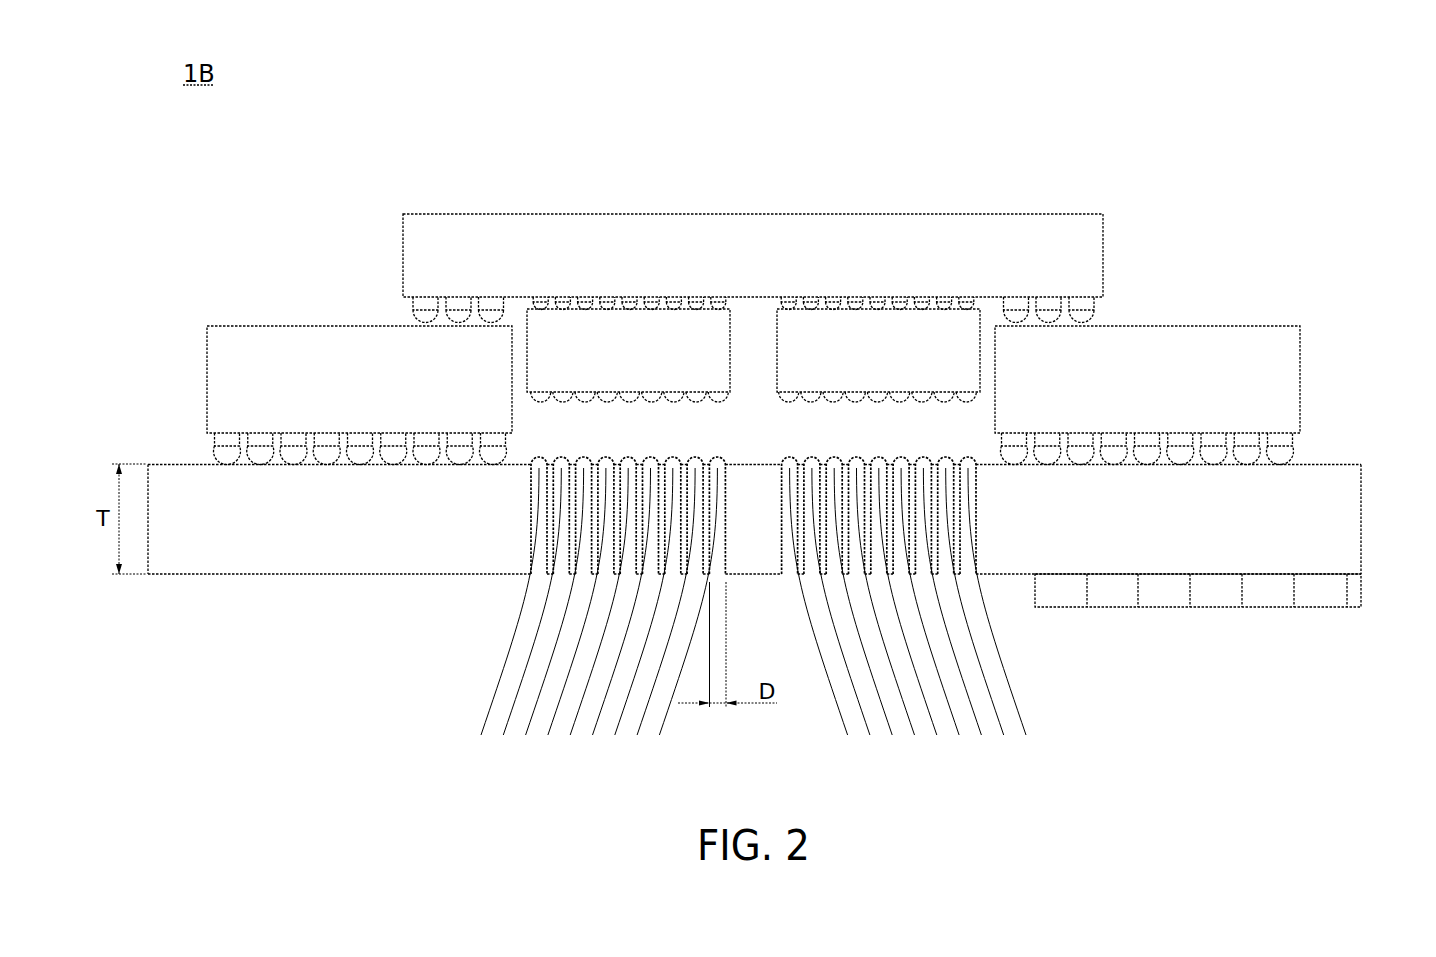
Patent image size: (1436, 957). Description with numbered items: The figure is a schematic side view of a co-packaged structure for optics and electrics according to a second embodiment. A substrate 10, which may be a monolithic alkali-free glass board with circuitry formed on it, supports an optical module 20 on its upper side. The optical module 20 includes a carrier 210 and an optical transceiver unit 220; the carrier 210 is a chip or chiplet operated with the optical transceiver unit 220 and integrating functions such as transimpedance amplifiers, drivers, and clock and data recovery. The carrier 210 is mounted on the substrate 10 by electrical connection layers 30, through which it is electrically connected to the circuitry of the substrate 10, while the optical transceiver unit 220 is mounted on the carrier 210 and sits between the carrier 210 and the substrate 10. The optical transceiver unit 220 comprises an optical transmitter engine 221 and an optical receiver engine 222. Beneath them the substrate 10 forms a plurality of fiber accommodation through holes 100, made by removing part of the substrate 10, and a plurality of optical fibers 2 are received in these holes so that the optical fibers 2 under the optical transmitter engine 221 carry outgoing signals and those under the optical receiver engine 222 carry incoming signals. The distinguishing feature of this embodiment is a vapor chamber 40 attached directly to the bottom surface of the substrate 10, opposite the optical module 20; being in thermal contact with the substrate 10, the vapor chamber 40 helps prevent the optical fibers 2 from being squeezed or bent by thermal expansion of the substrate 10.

The optical fibers 2 is at (493, 708).
The substrate 10 is at (1352, 519).
The optical module 20 is at (820, 108).
The electrical connection layer 30 is at (250, 337).
The vapor chamber 40 is at (1355, 593).
The fiber accommodation through holes 100 is at (517, 521).
The carrier 210 is at (516, 235).
The optical transceiver unit 220 is at (943, 148).
The optical transmitter engine 221 is at (639, 330).
The optical receiver engine 222 is at (892, 330).